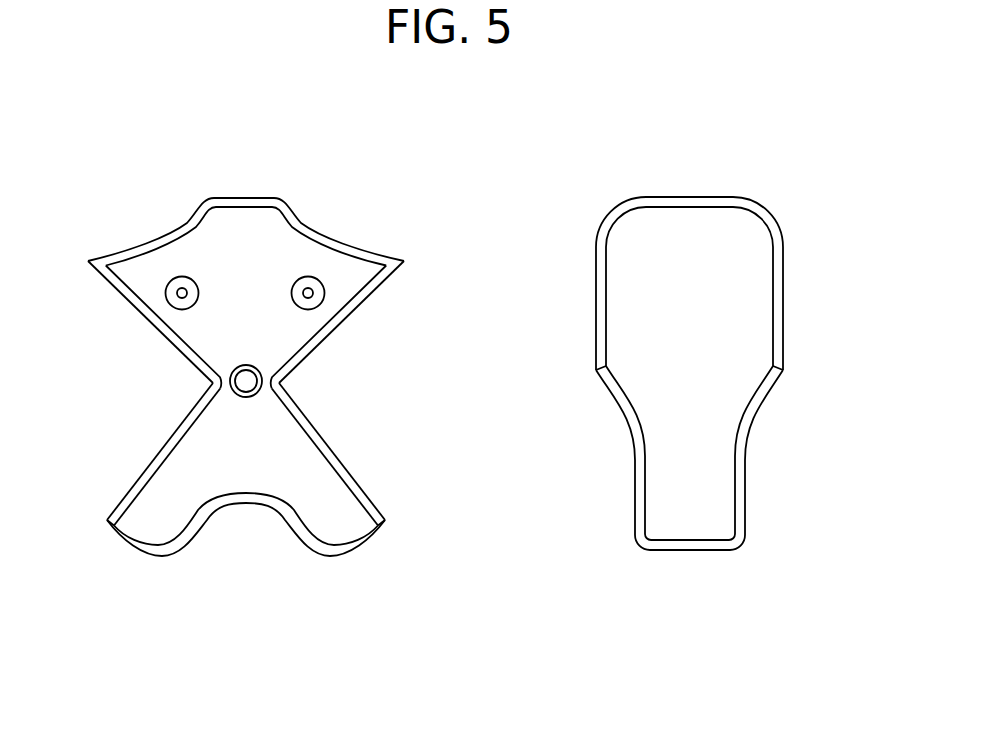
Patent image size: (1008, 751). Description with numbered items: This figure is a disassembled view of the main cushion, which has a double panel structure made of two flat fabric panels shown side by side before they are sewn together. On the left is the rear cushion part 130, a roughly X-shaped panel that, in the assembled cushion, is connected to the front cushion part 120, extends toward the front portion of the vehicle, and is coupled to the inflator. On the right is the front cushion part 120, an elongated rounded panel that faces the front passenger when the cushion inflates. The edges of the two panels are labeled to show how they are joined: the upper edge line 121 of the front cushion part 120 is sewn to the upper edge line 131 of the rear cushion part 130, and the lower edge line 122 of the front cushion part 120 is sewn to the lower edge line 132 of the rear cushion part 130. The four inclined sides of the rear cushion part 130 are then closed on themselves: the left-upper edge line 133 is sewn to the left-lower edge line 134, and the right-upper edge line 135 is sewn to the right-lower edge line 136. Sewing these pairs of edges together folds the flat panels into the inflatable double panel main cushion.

The front cushion part 120 is at (739, 385).
The upper edge line 121 is at (687, 203).
The lower edge line 122 is at (690, 541).
The rear cushion part 130 is at (245, 364).
The upper edge line 131 is at (248, 201).
The lower edge line 132 is at (247, 504).
The left-upper edge line 133 is at (157, 325).
The left-lower edge line 134 is at (160, 455).
The right-upper edge line 135 is at (335, 323).
The right-lower edge line 136 is at (333, 457).